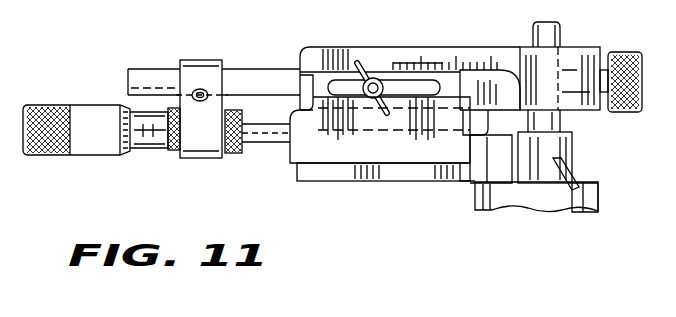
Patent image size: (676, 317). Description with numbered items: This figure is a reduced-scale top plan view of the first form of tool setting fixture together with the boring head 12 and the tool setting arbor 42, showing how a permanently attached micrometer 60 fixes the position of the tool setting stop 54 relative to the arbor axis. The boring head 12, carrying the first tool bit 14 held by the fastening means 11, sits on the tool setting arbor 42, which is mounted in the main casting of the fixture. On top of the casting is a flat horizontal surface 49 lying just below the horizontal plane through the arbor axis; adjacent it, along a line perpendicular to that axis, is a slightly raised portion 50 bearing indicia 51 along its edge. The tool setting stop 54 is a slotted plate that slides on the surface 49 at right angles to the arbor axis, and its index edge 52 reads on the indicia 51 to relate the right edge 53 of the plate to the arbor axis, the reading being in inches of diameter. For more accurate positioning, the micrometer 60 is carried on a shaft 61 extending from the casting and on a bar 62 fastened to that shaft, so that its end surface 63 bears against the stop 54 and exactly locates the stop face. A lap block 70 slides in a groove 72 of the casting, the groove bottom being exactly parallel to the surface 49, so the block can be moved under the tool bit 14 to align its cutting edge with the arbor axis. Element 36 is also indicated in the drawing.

The fastening means 11 is at (675, 7).
The boring head 12 is at (593, 183).
The first tool bit 14 is at (512, 140).
The corner of slide 36 is at (473, 164).
The tool setting arbor 42 is at (560, 40).
The flat horizontal surface 49 is at (300, 82).
The raised portion 50 is at (338, 47).
The indicia 51 is at (442, 60).
The index edge 52 is at (445, 72).
The right edge 53 is at (478, 124).
The tool setting stop 54 is at (333, 166).
The micrometer 60 is at (185, 171).
The shaft 61 is at (152, 68).
The bar 62 is at (210, 60).
The end surface 63 is at (272, 136).
The lap block 70 is at (492, 145).
The groove 72 is at (398, 168).